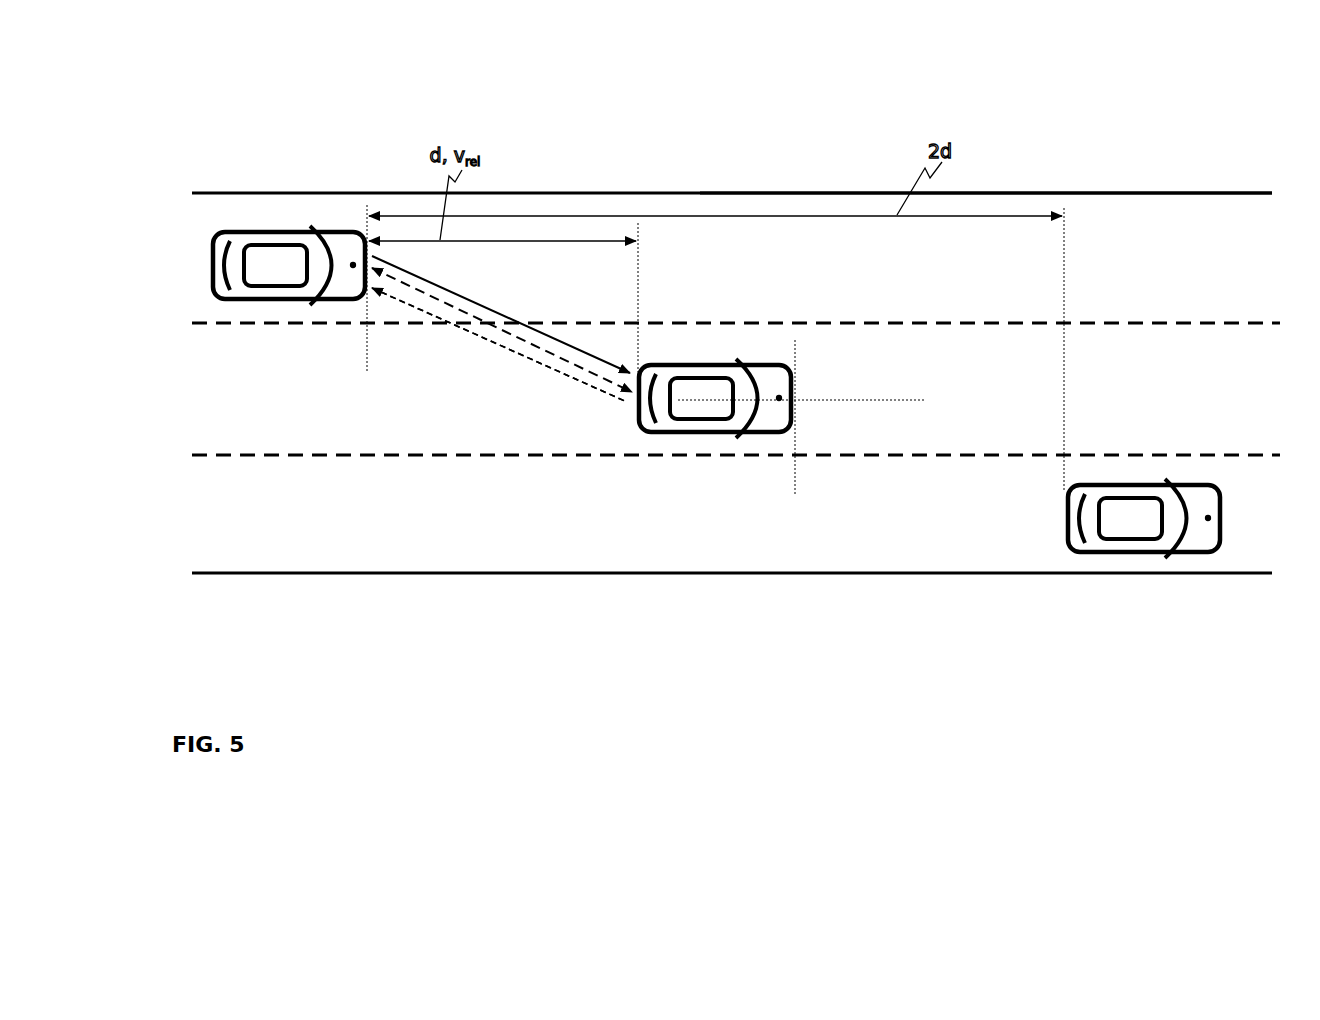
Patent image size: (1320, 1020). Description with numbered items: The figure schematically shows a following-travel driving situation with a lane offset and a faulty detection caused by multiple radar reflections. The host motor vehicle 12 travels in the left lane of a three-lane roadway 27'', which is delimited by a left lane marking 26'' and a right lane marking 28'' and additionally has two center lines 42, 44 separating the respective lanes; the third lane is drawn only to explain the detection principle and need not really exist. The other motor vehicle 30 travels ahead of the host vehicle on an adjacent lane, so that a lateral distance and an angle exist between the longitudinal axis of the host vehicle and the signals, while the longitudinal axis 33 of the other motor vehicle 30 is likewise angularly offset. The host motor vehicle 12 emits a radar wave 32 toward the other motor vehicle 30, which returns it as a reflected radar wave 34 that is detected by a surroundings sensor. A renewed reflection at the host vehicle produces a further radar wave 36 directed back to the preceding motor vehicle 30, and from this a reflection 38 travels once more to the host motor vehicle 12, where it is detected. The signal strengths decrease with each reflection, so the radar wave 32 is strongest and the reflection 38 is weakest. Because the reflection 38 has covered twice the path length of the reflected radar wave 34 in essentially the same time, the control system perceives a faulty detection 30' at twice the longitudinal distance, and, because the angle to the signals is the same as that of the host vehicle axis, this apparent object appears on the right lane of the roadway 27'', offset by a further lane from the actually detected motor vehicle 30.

The motor vehicle 12 is at (268, 225).
The left lane marking 26'' is at (696, 162).
The roadway 27'' is at (986, 163).
The right lane marking 28'' is at (697, 541).
The center line 42 is at (190, 322).
The center line 44 is at (192, 455).
The other motor vehicle 30 is at (711, 515).
The faulty detection 30' is at (1144, 569).
The radar wave 32 is at (465, 298).
The longitudinal axis 33 is at (903, 400).
The reflected radar wave 34 is at (523, 327).
The further radar wave 36 is at (407, 290).
The reflection 38 is at (532, 357).